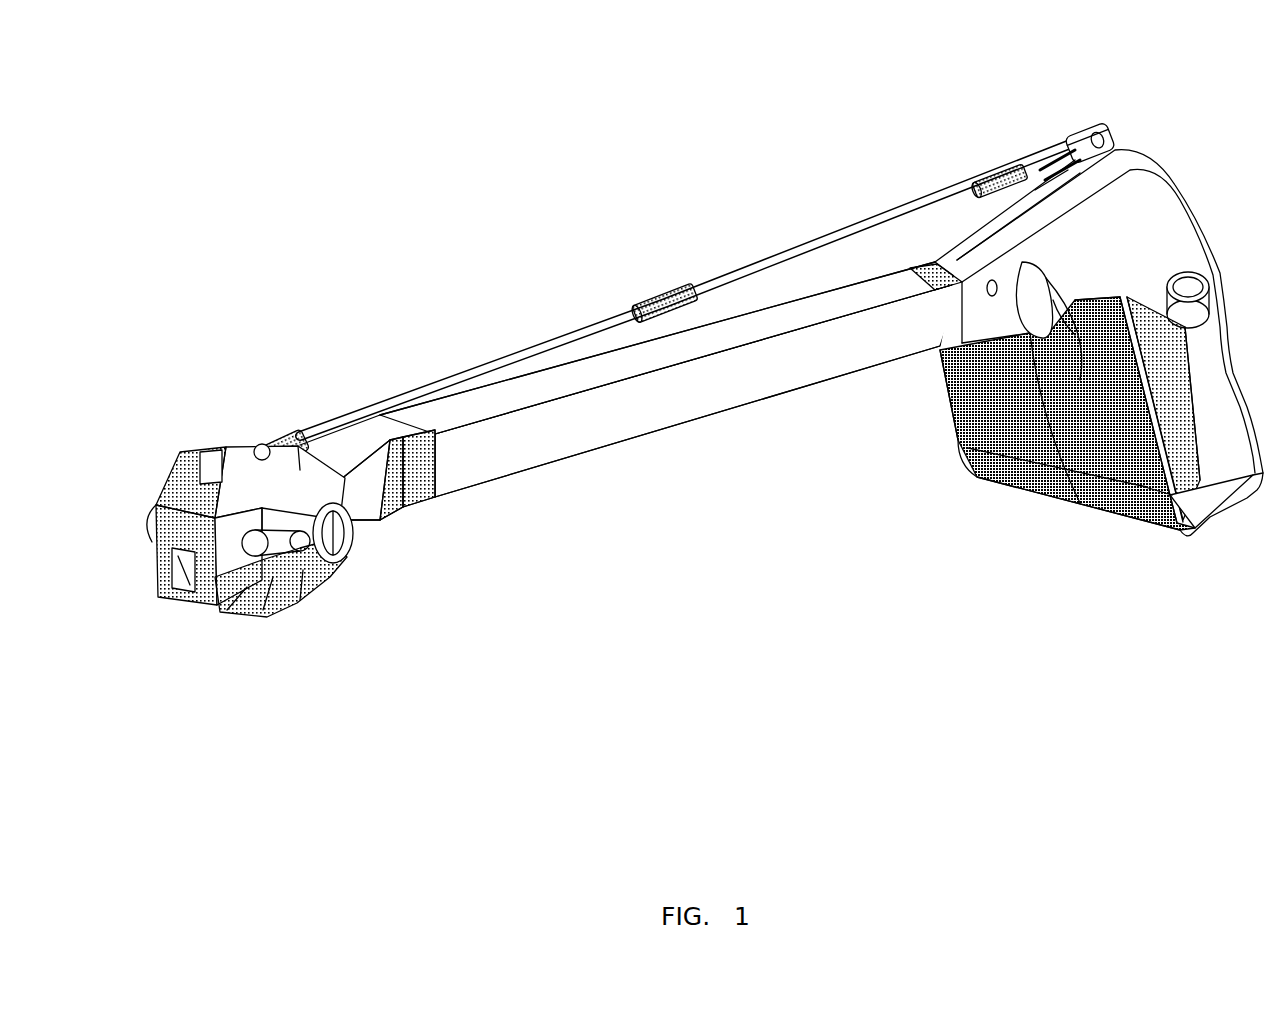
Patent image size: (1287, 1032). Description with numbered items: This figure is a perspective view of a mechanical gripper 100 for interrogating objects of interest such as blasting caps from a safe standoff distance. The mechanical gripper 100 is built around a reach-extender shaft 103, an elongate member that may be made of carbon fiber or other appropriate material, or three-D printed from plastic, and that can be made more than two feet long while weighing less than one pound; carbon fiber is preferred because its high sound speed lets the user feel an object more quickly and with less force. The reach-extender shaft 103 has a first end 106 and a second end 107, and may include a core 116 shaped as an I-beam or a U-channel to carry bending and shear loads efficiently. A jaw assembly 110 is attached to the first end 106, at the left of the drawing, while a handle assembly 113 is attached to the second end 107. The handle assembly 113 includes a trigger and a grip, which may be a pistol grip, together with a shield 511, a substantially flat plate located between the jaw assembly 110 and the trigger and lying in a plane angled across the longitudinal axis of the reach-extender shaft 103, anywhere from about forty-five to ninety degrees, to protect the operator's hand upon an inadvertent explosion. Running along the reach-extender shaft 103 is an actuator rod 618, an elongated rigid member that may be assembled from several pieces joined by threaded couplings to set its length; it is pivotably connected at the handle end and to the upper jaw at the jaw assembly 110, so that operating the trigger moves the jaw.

The mechanical gripper 100 is at (669, 390).
The reach-extender shaft 103 is at (717, 415).
The first end 106 is at (415, 568).
The second end 107 is at (942, 443).
The jaw assembly 110 is at (205, 410).
The handle assembly 113 is at (1007, 115).
The core 116 is at (650, 435).
The shield 511 is at (1132, 467).
The actuator rod 618 is at (585, 318).